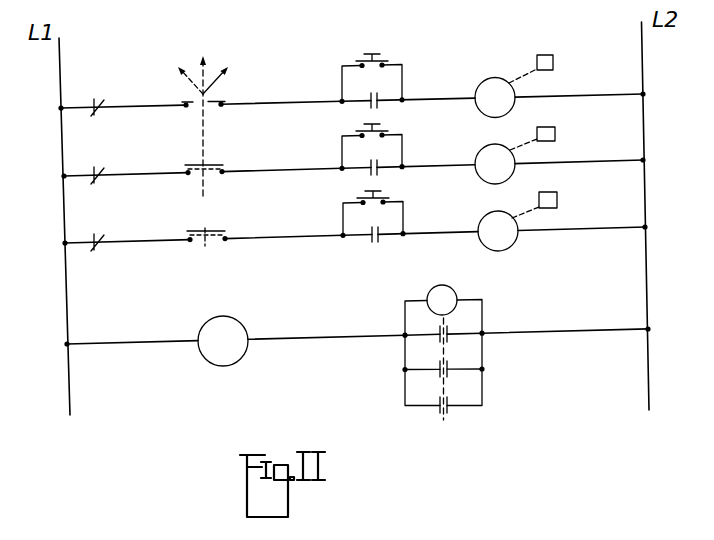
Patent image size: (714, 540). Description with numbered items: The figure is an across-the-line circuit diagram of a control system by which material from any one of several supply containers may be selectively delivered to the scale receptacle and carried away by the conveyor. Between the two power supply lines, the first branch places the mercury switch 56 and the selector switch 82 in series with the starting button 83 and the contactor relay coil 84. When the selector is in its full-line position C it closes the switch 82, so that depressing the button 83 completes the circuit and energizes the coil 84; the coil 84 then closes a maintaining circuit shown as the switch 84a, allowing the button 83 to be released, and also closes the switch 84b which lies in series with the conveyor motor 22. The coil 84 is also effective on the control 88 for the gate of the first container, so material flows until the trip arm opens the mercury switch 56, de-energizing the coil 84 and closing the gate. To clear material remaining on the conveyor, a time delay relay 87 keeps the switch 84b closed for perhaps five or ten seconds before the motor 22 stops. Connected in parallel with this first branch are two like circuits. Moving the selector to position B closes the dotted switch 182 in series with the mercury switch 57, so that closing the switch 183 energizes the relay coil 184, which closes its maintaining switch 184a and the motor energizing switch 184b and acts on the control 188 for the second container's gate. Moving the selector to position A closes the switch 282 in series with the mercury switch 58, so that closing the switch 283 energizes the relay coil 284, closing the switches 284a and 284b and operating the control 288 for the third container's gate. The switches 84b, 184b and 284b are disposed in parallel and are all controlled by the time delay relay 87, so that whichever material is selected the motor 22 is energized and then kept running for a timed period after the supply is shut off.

The conveyor motor 22 is at (241, 360).
The mercury switch 56 is at (101, 110).
The mercury switch 57 is at (101, 178).
The mercury switch 58 is at (101, 245).
The selector switch 82 is at (221, 106).
The switch 182 is at (214, 164).
The switch 282 is at (216, 230).
The starting button 83 is at (386, 57).
The switch 183 is at (388, 127).
The switch 283 is at (388, 196).
The contactor relay coil 84 is at (496, 77).
The relay coil 184 is at (480, 150).
The relay coil 284 is at (483, 218).
The maintaining switch 84a is at (368, 106).
The maintaining switch 184a is at (368, 173).
The maintaining switch 284a is at (371, 241).
The control 88 is at (553, 58).
The control 188 is at (556, 130).
The control 288 is at (557, 196).
The time delay relay 87 is at (442, 285).
The motor energizing switch 84b is at (449, 334).
The motor energizing switch 184b is at (450, 368).
The motor energizing switch 284b is at (450, 404).